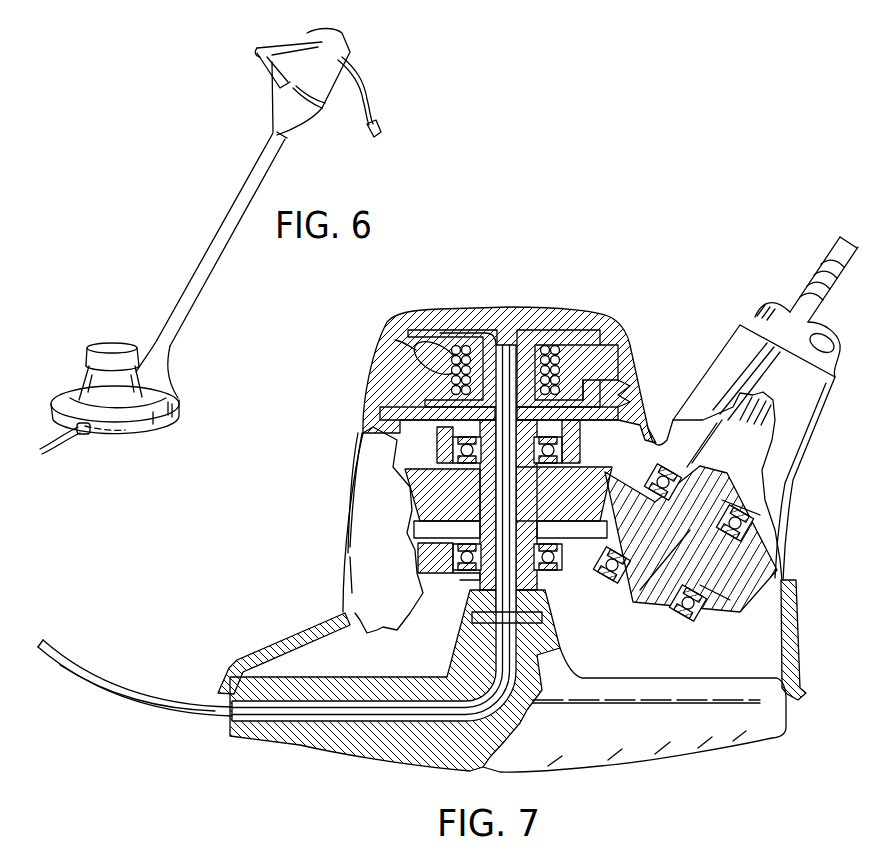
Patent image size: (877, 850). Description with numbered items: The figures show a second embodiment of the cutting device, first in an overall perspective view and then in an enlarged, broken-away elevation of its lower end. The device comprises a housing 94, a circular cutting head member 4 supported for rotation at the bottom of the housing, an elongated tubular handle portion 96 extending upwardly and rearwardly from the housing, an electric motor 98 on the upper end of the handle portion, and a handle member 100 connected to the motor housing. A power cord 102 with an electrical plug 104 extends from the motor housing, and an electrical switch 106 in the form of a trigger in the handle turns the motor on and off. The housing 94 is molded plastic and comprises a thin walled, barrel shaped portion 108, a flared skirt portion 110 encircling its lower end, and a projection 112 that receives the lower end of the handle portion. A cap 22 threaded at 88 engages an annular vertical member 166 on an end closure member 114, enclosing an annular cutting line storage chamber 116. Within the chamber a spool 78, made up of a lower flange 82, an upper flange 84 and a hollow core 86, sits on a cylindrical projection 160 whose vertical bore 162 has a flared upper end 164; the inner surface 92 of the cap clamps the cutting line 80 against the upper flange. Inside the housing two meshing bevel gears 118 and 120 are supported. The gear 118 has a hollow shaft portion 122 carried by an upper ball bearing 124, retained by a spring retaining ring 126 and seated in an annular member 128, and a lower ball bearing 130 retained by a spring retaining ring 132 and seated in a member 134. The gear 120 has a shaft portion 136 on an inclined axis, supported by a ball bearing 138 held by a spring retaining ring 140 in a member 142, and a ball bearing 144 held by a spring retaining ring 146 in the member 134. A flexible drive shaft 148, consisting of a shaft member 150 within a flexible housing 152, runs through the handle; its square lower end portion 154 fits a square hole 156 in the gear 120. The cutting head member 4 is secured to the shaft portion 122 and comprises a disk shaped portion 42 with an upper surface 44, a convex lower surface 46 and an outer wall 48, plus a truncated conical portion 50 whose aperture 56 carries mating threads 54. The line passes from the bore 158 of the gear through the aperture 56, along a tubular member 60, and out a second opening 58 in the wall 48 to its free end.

In FIG. 6, the cutting head member 4 is at (122, 438).
In FIG. 7, the cutting head member 4 is at (590, 778).
In FIG. 6, the cap 22 is at (114, 343).
In FIG. 7, the cap 22 is at (447, 313).
In FIG. 7, the disk shaped portion 42 is at (706, 748).
In FIG. 7, the upper surface 44 is at (662, 680).
In FIG. 7, the lower surface 46 is at (504, 773).
In FIG. 7, the outer wall 48 is at (790, 712).
In FIG. 7, the truncated conical portion 50 is at (545, 628).
In FIG. 7, the mating threads 54 is at (535, 598).
In FIG. 7, the aperture 56 is at (492, 626).
In FIG. 7, the second opening 58 is at (222, 730).
In FIG. 7, the tubular member 60 is at (400, 679).
In FIG. 7, the spool 78 is at (585, 383).
In FIG. 6, the cutting line 80 is at (44, 454).
In FIG. 7, the cutting line 80 is at (397, 338).
In FIG. 7, the lower flange 82 is at (405, 380).
In FIG. 7, the upper flange 84 is at (418, 360).
In FIG. 7, the hollow core 86 is at (496, 325).
In FIG. 7, the threads 88 is at (622, 400).
In FIG. 7, the inner surface 92 is at (588, 335).
In FIG. 6, the housing 94 is at (73, 367).
In FIG. 7, the housing 94 is at (336, 527).
In FIG. 6, the tubular handle portion 96 is at (228, 232).
In FIG. 6, the electric motor 98 is at (325, 115).
In FIG. 6, the handle member 100 is at (279, 43).
In FIG. 6, the power cord 102 is at (370, 95).
In FIG. 6, the electrical plug 104 is at (381, 124).
In FIG. 6, the electrical switch 106 is at (271, 66).
In FIG. 7, the barrel shaped portion 108 is at (355, 472).
In FIG. 7, the flared skirt portion 110 is at (268, 657).
In FIG. 6, the projection 112 is at (153, 352).
In FIG. 7, the projection 112 is at (737, 343).
In FIG. 7, the end closure member 114 is at (440, 422).
In FIG. 7, the cutting line storage chamber 116 is at (603, 350).
In FIG. 7, the bevel gear 118 is at (440, 530).
In FIG. 7, the bevel gear 120 is at (748, 600).
In FIG. 7, the hollow shaft portion 122 is at (450, 556).
In FIG. 7, the ball bearing 124 is at (450, 462).
In FIG. 7, the spring retaining ring 126 is at (564, 445).
In FIG. 7, the annular member 128 is at (568, 459).
In FIG. 7, the ball bearing 130 is at (440, 575).
In FIG. 7, the spring retaining ring 132 is at (470, 583).
In FIG. 7, the member 134 is at (590, 580).
In FIG. 7, the shaft portion 136 is at (645, 632).
In FIG. 7, the ball bearing 138 is at (781, 564).
In FIG. 7, the spring retaining ring 140 is at (748, 504).
In FIG. 7, the member 142 is at (752, 524).
In FIG. 7, the ball bearing 144 is at (703, 614).
In FIG. 7, the spring retaining ring 146 is at (691, 614).
In FIG. 7, the flexible drive shaft 148 is at (806, 280).
In FIG. 7, the shaft member 150 is at (852, 237).
In FIG. 7, the flexible housing 152 is at (803, 296).
In FIG. 7, the square cross sectioned lower end portion 154 is at (714, 462).
In FIG. 7, the square cross sectioned hole 156 is at (650, 606).
In FIG. 7, the bore 158 is at (455, 489).
In FIG. 7, the cylindrical projection 160 is at (536, 340).
In FIG. 7, the vertical bore 162 is at (506, 335).
In FIG. 7, the flared upper end 164 is at (516, 340).
In FIG. 7, the annular vertical member 166 is at (607, 388).